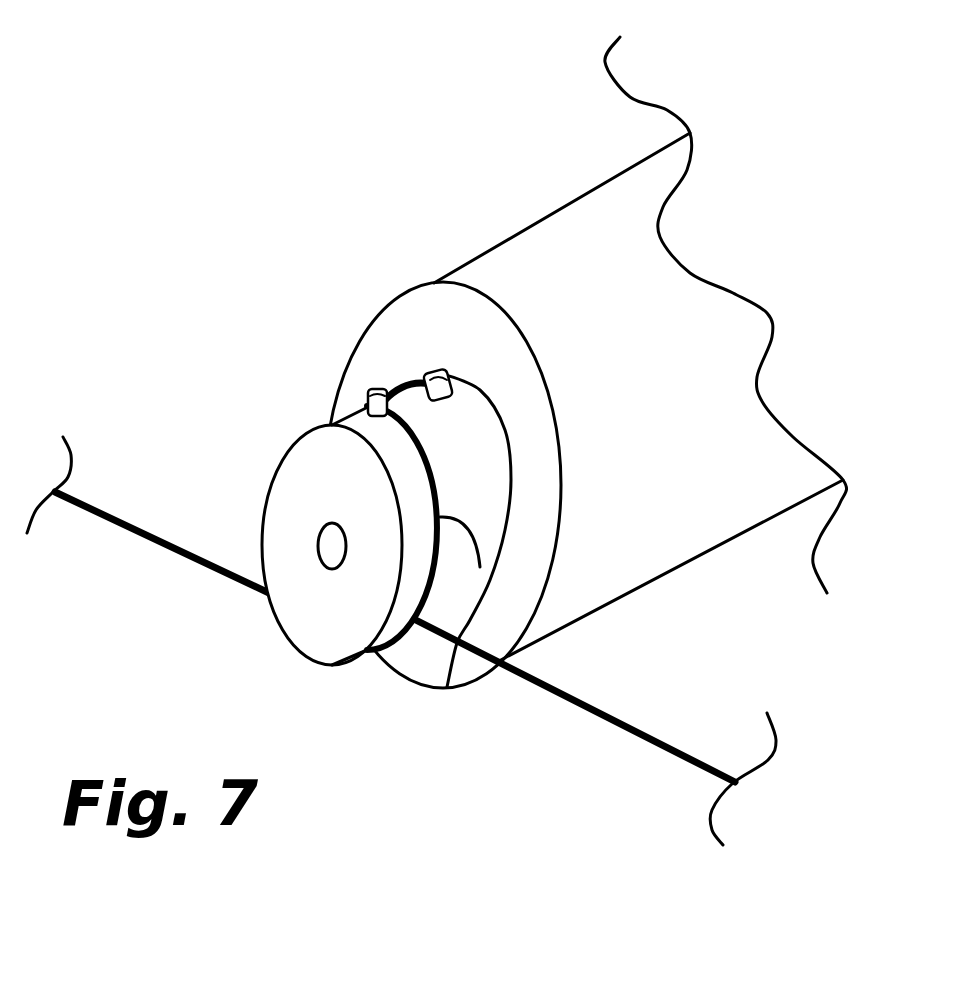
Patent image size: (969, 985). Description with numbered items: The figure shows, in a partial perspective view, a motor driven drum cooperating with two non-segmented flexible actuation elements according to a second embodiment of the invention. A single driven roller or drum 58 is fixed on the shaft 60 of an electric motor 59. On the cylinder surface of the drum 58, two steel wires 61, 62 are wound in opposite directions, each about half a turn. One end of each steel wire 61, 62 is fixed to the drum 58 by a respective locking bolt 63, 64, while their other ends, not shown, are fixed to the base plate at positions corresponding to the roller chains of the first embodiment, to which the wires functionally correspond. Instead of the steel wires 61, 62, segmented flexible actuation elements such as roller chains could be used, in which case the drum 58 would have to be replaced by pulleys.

The driven roller or drum 58 is at (340, 473).
The electric motor 59 is at (607, 307).
The shaft 60 is at (332, 568).
The steel wire 61 is at (447, 687).
The steel wire 62 is at (583, 700).
The locking bolt 63 is at (370, 397).
The locking bolt 64 is at (428, 372).